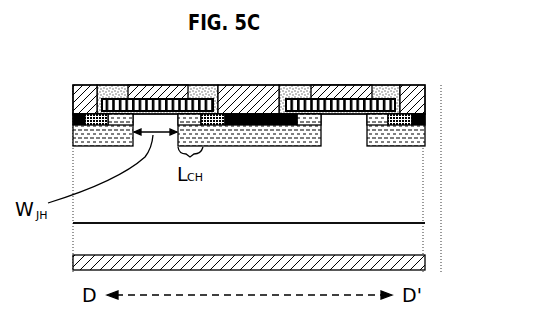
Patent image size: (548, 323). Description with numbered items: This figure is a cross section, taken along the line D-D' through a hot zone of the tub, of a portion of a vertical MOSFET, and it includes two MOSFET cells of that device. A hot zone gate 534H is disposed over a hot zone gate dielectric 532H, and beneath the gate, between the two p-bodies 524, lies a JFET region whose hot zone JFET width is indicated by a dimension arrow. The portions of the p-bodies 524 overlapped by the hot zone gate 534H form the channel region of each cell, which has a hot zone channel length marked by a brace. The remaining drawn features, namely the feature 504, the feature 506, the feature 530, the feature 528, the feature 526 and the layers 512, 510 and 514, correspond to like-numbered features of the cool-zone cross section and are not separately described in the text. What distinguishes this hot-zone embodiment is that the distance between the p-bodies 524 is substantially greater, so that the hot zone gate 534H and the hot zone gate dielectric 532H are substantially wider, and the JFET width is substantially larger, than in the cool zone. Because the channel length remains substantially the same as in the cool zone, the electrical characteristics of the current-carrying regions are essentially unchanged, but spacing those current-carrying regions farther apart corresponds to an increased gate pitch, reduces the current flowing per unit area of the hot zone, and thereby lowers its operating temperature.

The MOSFET cell feature 504 is at (86, 97).
The MOSFET cell feature 506 is at (152, 97).
The MOSFET cell feature 530 is at (386, 85).
The hot zone gate dielectric 532H is at (157, 104).
The hot zone gate 534H is at (116, 106).
The MOSFET cell feature 528 is at (90, 121).
The MOSFET cell feature 526 is at (103, 125).
The p-bodies 524 is at (96, 142).
The MOSFET cell layer 512 is at (267, 189).
The MOSFET cell layer 510 is at (267, 251).
The MOSFET cell layer 514 is at (74, 268).